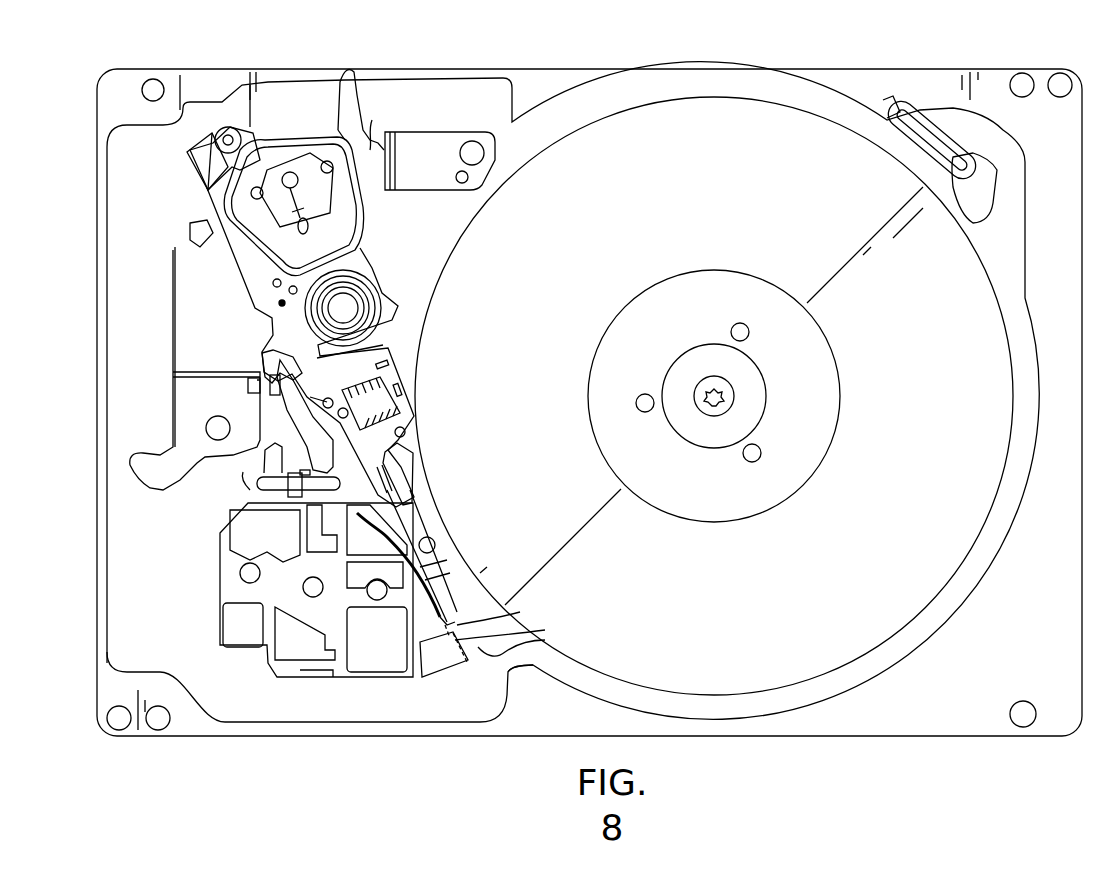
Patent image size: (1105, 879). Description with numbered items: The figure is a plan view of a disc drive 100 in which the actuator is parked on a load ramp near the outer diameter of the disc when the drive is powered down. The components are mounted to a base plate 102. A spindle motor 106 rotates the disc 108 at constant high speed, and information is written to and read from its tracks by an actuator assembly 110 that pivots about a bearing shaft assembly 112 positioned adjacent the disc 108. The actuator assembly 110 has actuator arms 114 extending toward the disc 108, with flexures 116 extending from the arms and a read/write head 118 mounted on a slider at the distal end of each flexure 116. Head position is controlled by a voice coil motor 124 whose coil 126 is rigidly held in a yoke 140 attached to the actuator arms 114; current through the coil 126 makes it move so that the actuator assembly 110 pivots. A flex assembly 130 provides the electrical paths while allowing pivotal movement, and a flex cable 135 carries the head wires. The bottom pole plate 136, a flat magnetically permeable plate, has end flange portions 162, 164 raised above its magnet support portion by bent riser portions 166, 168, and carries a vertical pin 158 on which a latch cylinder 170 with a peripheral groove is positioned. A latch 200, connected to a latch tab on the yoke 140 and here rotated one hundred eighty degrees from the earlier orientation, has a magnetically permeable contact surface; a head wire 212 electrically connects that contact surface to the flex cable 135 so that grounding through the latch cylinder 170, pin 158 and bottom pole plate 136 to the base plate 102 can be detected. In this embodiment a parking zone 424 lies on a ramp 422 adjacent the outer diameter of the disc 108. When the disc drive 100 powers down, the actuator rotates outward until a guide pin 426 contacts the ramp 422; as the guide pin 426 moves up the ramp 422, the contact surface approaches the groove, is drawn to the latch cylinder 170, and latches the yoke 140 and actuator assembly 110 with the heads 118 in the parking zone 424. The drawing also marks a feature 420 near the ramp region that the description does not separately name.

The disc drive 100 is at (840, 48).
The base plate 102 is at (132, 529).
The spindle motor 106 is at (795, 408).
The disc 108 is at (740, 625).
The actuator assembly 110 is at (440, 348).
The bearing shaft assembly 112 is at (343, 308).
The actuator arm 114 is at (413, 453).
The flexure 116 is at (440, 572).
The read/write head 118 is at (453, 632).
The voice coil motor 124 is at (360, 120).
The coil 126 is at (293, 153).
The flex assembly 130 is at (345, 468).
The flex cable 135 is at (303, 410).
The bottom pole plate 136 is at (150, 414).
The yoke 140 is at (228, 242).
The pin 158 is at (229, 137).
The end flange portion 162 is at (168, 475).
The end flange portion 164 is at (437, 183).
The riser portion 166 is at (266, 396).
The riser portion 168 is at (393, 163).
The latch cylinder 170 is at (235, 137).
The latch 200 is at (166, 197).
The head wire 212 is at (257, 296).
The cavity wall portion 420 is at (567, 660).
The ramp 422 is at (430, 663).
The parking zone 424 is at (545, 640).
The guide pin 426 is at (465, 660).